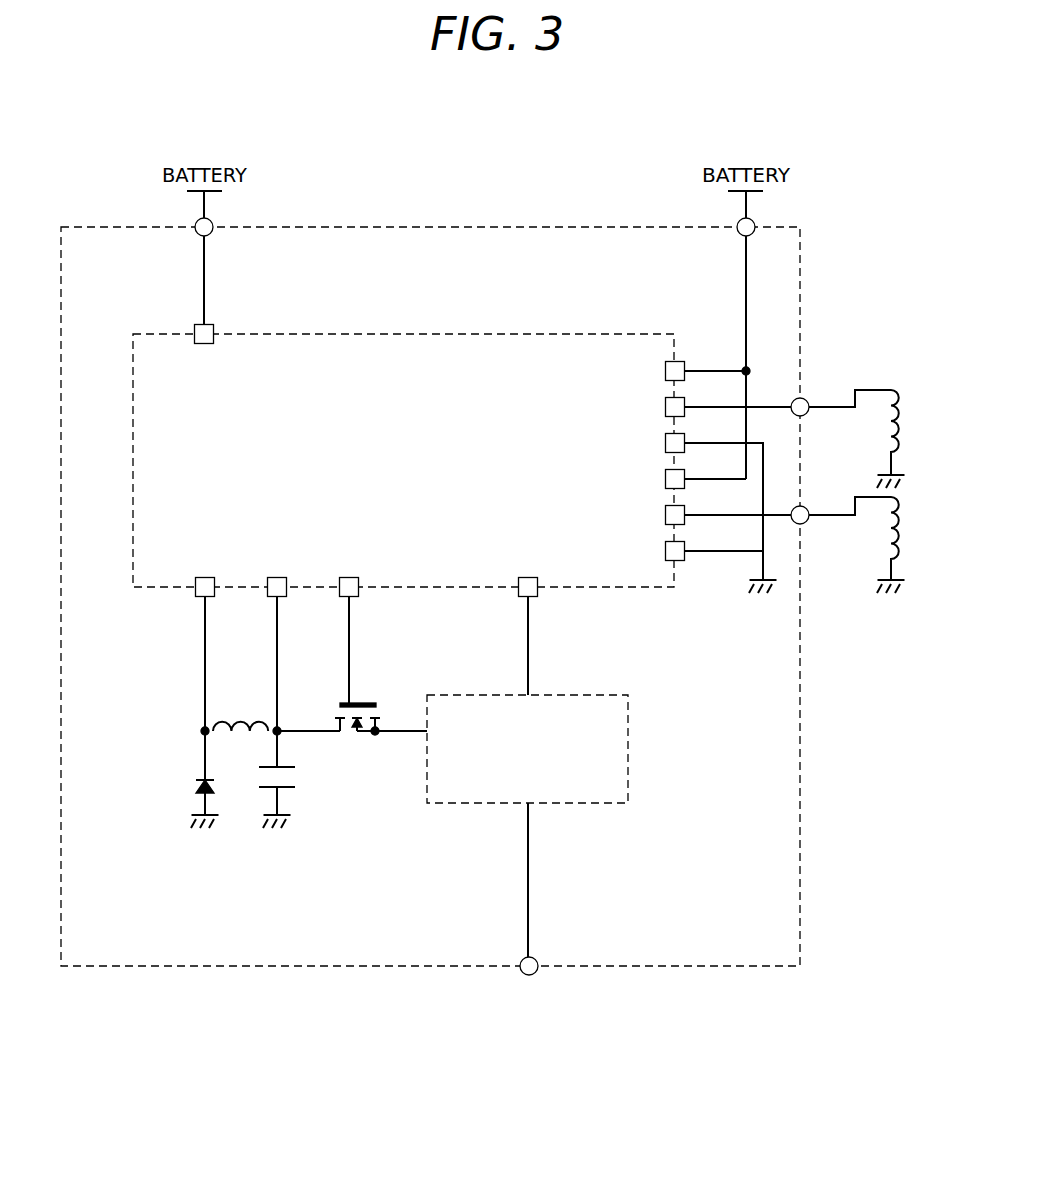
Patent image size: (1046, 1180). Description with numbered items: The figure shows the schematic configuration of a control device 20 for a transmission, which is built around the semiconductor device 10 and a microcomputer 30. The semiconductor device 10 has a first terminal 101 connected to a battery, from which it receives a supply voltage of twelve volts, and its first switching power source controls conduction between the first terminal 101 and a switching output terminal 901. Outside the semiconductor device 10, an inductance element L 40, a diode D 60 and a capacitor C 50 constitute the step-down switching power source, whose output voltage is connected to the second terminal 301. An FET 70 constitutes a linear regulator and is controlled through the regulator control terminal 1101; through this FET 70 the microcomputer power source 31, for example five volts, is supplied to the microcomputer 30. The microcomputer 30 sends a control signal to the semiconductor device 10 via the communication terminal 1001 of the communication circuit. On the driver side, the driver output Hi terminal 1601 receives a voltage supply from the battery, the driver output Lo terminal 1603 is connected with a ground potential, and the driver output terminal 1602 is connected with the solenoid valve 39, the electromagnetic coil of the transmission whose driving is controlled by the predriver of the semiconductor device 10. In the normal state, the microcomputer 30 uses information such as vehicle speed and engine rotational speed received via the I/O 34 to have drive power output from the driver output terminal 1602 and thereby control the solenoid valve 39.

The control device for transmission 20 is at (383, 227).
The semiconductor device 10 is at (423, 334).
The first terminal 101 is at (197, 333).
The driver output Hi terminal 1601 is at (665, 371).
The driver output terminal 1602 is at (665, 407).
The driver output Lo terminal 1603 is at (665, 443).
The solenoid valve 39 is at (900, 432).
The switching output terminal 901 is at (205, 577).
The second terminal 301 is at (278, 577).
The regulator control terminal 1101 is at (350, 577).
The communication terminal 1001 is at (537, 597).
The inductance element L 40 is at (242, 717).
The diode D 60 is at (197, 786).
The capacitor C 50 is at (300, 780).
The FET 70 is at (365, 697).
The microcomputer power source 31 is at (393, 736).
The microcomputer 30 is at (628, 729).
The I/O 34 is at (538, 957).